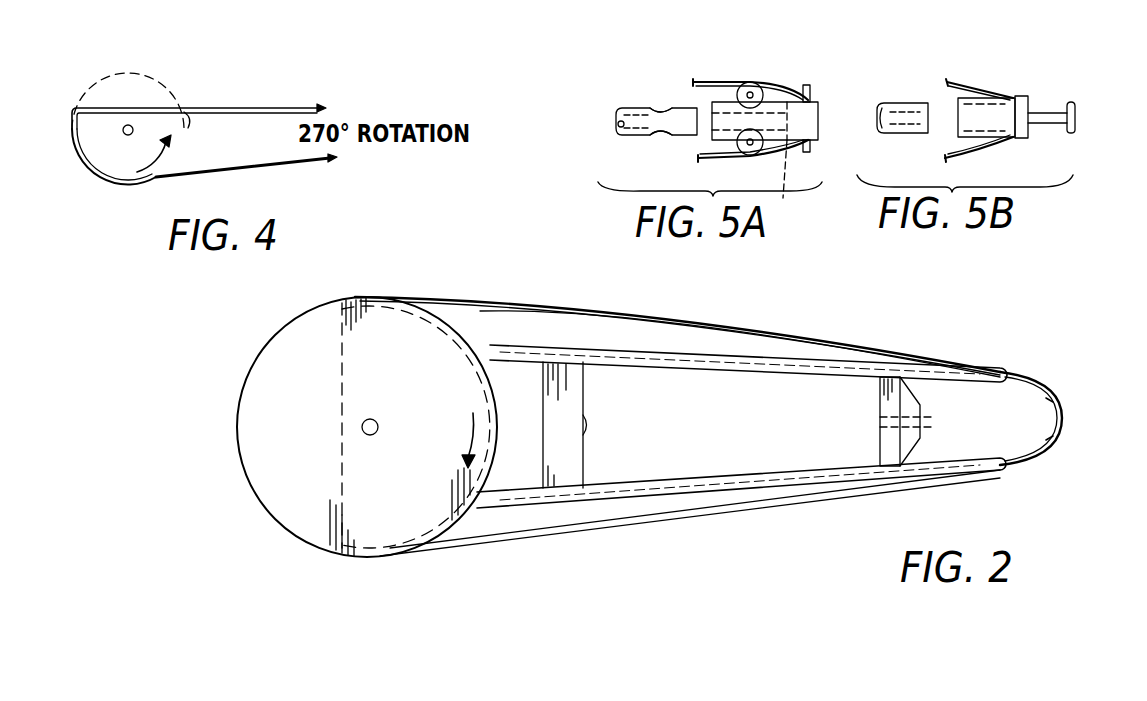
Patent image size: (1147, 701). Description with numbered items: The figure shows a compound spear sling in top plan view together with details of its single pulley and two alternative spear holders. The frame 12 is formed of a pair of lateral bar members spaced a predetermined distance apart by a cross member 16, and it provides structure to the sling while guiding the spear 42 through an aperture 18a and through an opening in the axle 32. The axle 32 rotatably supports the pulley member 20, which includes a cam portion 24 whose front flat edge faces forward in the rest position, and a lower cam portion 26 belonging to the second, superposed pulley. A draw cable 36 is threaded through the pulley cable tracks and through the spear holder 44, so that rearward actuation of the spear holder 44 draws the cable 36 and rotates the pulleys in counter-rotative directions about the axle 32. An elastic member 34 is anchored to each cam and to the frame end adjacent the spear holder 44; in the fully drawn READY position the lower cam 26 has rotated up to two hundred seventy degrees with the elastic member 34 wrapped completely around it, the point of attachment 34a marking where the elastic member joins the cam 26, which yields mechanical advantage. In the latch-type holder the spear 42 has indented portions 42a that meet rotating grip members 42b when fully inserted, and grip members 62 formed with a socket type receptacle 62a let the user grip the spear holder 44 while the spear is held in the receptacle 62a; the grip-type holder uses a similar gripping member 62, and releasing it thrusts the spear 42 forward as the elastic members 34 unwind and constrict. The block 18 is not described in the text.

In FIG. 2, the frame 12 is at (775, 367).
In FIG. 2, the cross member 16 is at (568, 423).
In FIG. 2, the end block 18 is at (883, 437).
In FIG. 2, the aperture 18a is at (927, 418).
In FIG. 2, the pulley member 20 is at (275, 350).
In FIG. 2, the cam portion 24 is at (342, 378).
In FIG. 4, the cam portion 26 is at (93, 152).
In FIG. 4, the axle 32 is at (131, 125).
In FIG. 2, the axle 32 is at (374, 421).
In FIG. 4, the elastic member 34 is at (237, 108).
In FIG. 2, the elastic member 34 is at (637, 315).
In FIG. 4, the point of attachment 34a is at (188, 120).
In FIG. 4, the draw cable 36 is at (280, 168).
In FIG. 5A, the draw cable 36 is at (722, 80).
In FIG. 5B, the draw cable 36 is at (977, 88).
In FIG. 2, the draw cable 36 is at (543, 303).
In FIG. 5A, the spear 42 is at (638, 130).
In FIG. 5B, the spear 42 is at (915, 105).
In FIG. 5A, the indented portions 42a is at (662, 110).
In FIG. 5A, the rotating grip members 42b is at (752, 82).
In FIG. 2, the spear holder 44 is at (1063, 432).
In FIG. 5A, the grip members 62 is at (813, 95).
In FIG. 5B, the grip members 62 is at (1070, 105).
In FIG. 5A, the socket type receptacle 62a is at (806, 181).